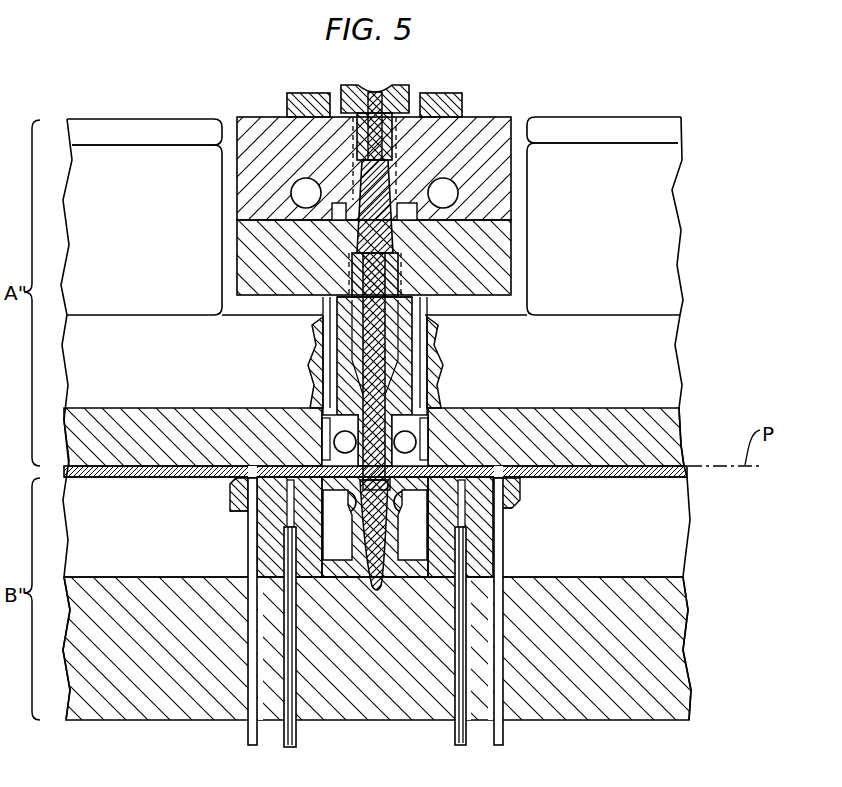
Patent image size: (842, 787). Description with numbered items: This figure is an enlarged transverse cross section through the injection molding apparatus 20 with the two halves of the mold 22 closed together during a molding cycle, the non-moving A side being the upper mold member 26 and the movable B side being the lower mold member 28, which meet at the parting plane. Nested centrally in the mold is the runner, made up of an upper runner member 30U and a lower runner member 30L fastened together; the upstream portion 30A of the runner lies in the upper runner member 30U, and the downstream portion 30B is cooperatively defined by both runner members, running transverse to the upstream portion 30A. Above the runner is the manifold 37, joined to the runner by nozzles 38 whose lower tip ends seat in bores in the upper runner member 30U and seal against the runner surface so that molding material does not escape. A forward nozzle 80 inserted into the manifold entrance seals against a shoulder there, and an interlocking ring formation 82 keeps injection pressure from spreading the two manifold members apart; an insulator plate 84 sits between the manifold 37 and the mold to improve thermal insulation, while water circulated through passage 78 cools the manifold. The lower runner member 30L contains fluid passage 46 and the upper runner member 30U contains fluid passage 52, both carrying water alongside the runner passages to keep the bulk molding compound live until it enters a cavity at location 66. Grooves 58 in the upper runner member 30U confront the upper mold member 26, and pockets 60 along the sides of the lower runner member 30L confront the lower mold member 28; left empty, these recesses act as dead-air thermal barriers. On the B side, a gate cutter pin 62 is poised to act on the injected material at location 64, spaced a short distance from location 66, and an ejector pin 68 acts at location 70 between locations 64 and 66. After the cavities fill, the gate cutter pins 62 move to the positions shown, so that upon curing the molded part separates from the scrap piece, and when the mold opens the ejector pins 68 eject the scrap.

The injection molding apparatus 20 is at (502, 50).
The mold 22 is at (690, 722).
The upper mold member 26 is at (675, 423).
The lower mold member 28 is at (688, 535).
The upstream portion of runner 30A is at (352, 410).
The downstream portion of runner 30B is at (410, 462).
The lower runner member 30L is at (470, 520).
The upper runner member 30U is at (428, 430).
The manifold 37 is at (491, 108).
The nozzle 38 is at (418, 237).
The fluid passage 46 is at (327, 525).
The fluid passage 52 is at (340, 445).
The grooves 58 is at (327, 440).
The pockets 60 is at (330, 540).
The gate cutter pin 62 is at (252, 708).
The location of gate cutter pin point of action 64 is at (250, 465).
The location where material passes into cavity 66 is at (383, 588).
The ejector pin 68 is at (296, 708).
The location of ejector pin point of action 70 is at (287, 503).
The passage 78 is at (321, 193).
The forward nozzle 80 is at (403, 88).
The interlocking ring formation 82 is at (418, 222).
The insulator plate 84 is at (495, 308).